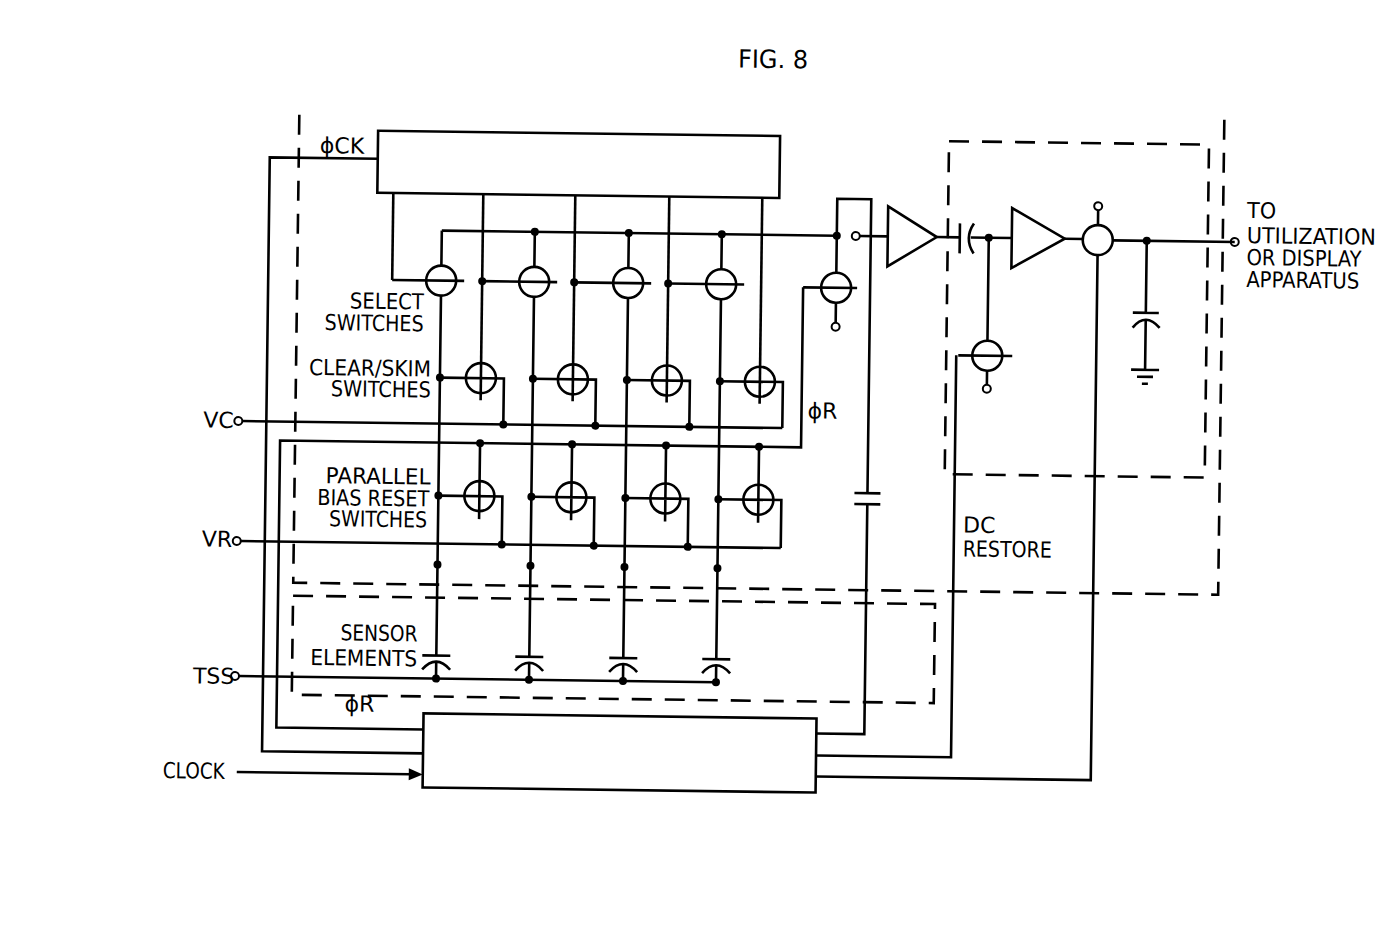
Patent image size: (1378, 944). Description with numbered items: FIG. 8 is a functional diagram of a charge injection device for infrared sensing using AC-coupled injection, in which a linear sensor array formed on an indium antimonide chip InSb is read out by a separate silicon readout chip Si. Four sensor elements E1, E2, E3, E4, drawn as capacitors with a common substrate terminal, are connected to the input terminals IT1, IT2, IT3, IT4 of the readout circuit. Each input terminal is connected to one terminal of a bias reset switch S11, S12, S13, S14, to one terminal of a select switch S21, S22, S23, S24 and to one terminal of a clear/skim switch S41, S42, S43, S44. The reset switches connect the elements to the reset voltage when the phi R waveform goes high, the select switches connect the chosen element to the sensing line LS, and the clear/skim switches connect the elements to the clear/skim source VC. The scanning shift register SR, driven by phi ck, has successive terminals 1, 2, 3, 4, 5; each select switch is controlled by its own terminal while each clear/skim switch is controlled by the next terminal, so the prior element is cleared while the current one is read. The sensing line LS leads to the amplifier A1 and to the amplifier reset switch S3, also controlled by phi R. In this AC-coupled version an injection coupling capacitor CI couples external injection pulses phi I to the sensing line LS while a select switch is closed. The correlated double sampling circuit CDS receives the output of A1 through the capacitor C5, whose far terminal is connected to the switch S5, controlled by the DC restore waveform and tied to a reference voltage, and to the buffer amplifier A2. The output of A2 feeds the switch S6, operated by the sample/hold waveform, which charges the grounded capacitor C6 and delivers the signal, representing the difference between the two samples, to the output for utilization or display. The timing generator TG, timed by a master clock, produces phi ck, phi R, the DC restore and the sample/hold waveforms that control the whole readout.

The scanning shift register SR is at (742, 129).
The timing generator TG is at (775, 717).
The correlated double sampling circuit CDS is at (1046, 138).
The sensing line LS is at (665, 222).
The silicon readout integrated circuit Si is at (758, 351).
The indium antimonide sensor integrated circuit InSb is at (613, 649).
The first shift register terminal 1 is at (402, 236).
The second shift register terminal 2 is at (492, 297).
The third shift register terminal 3 is at (583, 298).
The fourth shift register terminal 4 is at (678, 300).
The fifth shift register terminal 5 is at (771, 301).
The sensor select switch S21 is at (426, 443).
The sensor select switch S22 is at (515, 444).
The sensor select switch S23 is at (608, 445).
The sensor select switch S24 is at (702, 447).
The clear/skim switch S41 is at (480, 386).
The clear/skim switch S42 is at (574, 386).
The clear/skim switch S43 is at (668, 387).
The clear/skim switch S44 is at (760, 385).
The bias reset switch S11 is at (479, 494).
The bias reset switch S12 is at (572, 495).
The bias reset switch S13 is at (665, 496).
The bias reset switch S14 is at (758, 495).
The input terminal IT1 is at (454, 564).
The input terminal IT2 is at (547, 564).
The input terminal IT3 is at (640, 564).
The input terminal IT4 is at (734, 564).
The sensor element E1 is at (452, 665).
The sensor element E2 is at (545, 666).
The sensor element E3 is at (638, 667).
The sensor element E4 is at (731, 667).
The amplifier reset switch S3 is at (830, 295).
The injection coupling capacitor CI is at (864, 467).
The amplifier A1 is at (912, 236).
The capacitor C5 is at (963, 223).
The buffer amplifier A2 is at (1026, 238).
The controlled switch S5 is at (922, 497).
The second controlled switch S6 is at (1028, 465).
The capacitor C6 is at (1156, 311).